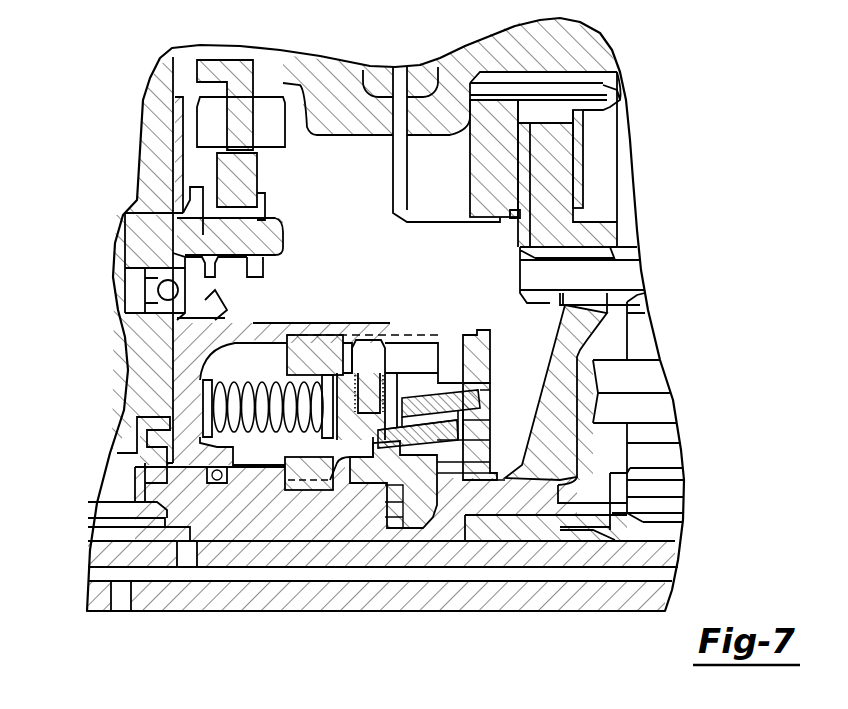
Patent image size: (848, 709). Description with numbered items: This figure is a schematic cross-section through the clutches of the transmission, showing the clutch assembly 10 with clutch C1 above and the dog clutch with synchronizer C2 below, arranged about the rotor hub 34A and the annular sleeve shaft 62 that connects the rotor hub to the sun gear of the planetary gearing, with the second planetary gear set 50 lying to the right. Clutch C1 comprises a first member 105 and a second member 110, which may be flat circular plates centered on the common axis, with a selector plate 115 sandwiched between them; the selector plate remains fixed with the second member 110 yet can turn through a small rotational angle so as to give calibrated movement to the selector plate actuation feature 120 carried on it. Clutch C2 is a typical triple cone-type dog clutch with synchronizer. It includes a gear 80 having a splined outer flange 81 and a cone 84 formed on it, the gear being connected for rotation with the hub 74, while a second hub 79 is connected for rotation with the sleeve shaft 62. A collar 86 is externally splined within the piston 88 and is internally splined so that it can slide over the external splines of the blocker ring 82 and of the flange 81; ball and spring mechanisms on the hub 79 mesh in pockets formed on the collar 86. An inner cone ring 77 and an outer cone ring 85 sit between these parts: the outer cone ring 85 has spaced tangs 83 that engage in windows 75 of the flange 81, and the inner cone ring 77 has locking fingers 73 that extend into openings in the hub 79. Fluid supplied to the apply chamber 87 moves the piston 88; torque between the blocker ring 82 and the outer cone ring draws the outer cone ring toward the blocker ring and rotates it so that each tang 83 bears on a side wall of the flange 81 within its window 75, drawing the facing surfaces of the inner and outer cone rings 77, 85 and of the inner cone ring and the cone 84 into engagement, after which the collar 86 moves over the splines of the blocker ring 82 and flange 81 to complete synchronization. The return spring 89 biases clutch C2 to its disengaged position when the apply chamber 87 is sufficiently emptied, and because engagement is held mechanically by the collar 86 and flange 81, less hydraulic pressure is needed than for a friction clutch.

The electric machine assembly 10 is at (683, 88).
The selector plate 115 is at (583, 153).
The second member 110 is at (573, 183).
The clutch C1 is at (598, 198).
The first member 105 is at (477, 157).
The selector plate actuation feature 120 is at (401, 211).
The return spring 89 is at (260, 388).
The piston 88 is at (240, 333).
The rotor hub 34A is at (150, 370).
The apply chamber 87 is at (152, 435).
The clutch C2 is at (250, 502).
The collar 86 is at (400, 358).
The blocker ring 82 is at (415, 385).
The tangs 83 is at (460, 400).
The splined outer flange 81 is at (485, 353).
The windows 75 is at (485, 386).
The hub 74 is at (553, 433).
The gear 80 is at (473, 438).
The hub 79 is at (330, 462).
The second planetary gear set 50 is at (684, 405).
The annular sleeve shaft 62 is at (267, 520).
The locking fingers 73 is at (336, 470).
The cone 84 is at (402, 471).
The inner cone ring 77 is at (420, 440).
The outer cone ring 85 is at (433, 417).